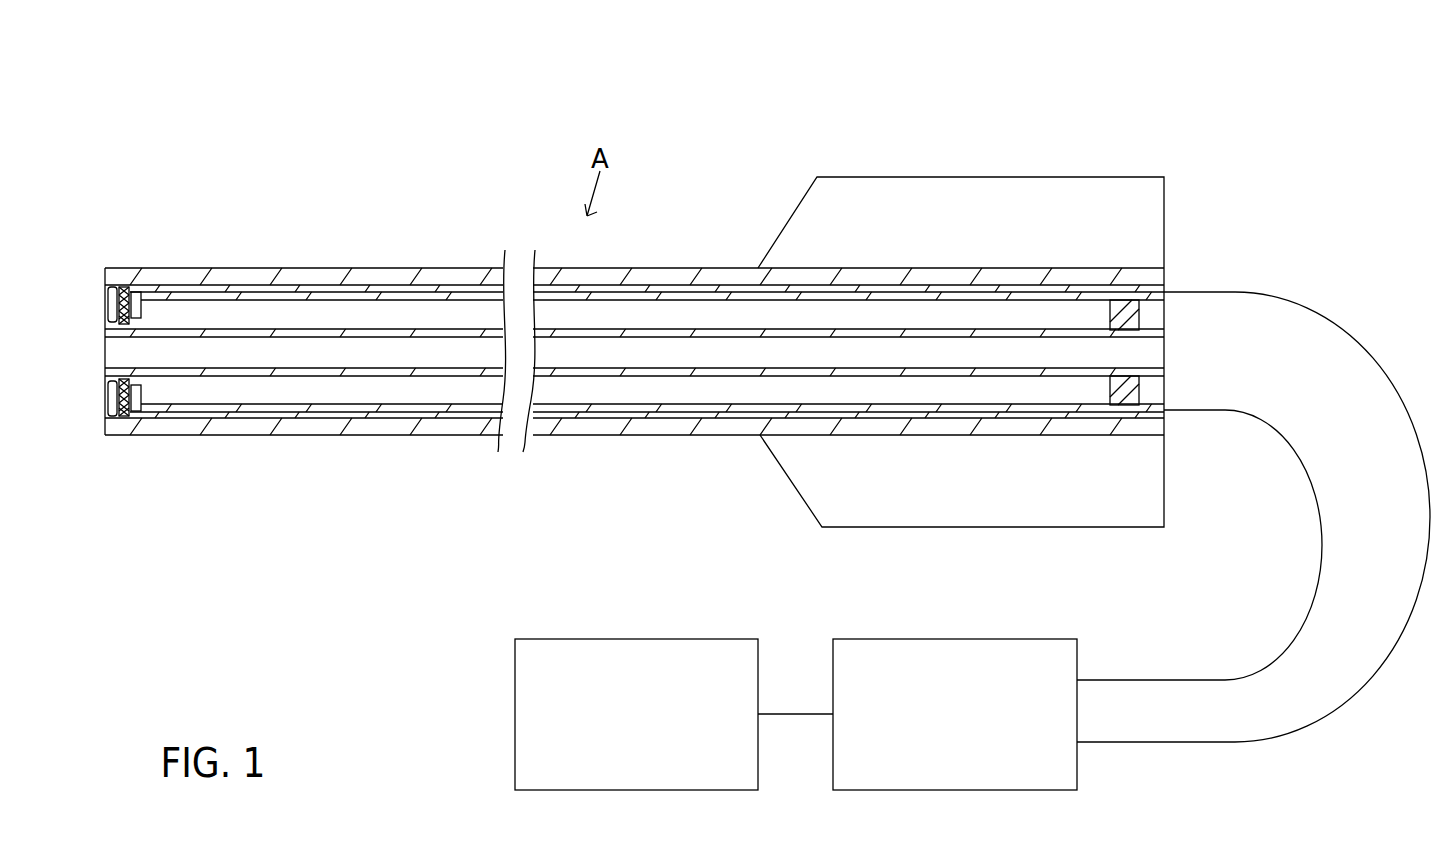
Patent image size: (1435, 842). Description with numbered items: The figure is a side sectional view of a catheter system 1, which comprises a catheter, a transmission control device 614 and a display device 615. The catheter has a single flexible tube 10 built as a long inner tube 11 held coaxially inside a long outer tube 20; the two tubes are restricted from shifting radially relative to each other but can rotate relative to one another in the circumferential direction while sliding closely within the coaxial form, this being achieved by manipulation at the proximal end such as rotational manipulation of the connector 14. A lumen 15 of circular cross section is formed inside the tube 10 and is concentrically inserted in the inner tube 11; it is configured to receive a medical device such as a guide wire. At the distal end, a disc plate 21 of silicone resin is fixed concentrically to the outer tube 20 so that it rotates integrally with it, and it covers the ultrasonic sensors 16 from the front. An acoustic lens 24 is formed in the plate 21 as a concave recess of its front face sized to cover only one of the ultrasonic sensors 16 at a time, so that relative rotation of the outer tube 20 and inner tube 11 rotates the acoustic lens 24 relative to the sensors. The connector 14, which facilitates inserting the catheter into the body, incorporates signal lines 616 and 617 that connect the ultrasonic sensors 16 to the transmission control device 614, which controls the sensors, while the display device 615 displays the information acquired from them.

The catheter system 1 is at (1231, 101).
The tube 10 is at (445, 196).
The outer tube 20 is at (343, 272).
The inner tube 11 is at (410, 285).
The signal line 616 is at (637, 285).
The lumen 15 is at (390, 368).
The signal line 617 is at (597, 420).
The plate 21 is at (103, 298).
The acoustic lens 24 is at (103, 404).
The ultrasonic sensors 16 is at (123, 290).
The connector 14 is at (1143, 208).
The display device 615 is at (638, 639).
The transmission control device 614 is at (953, 639).